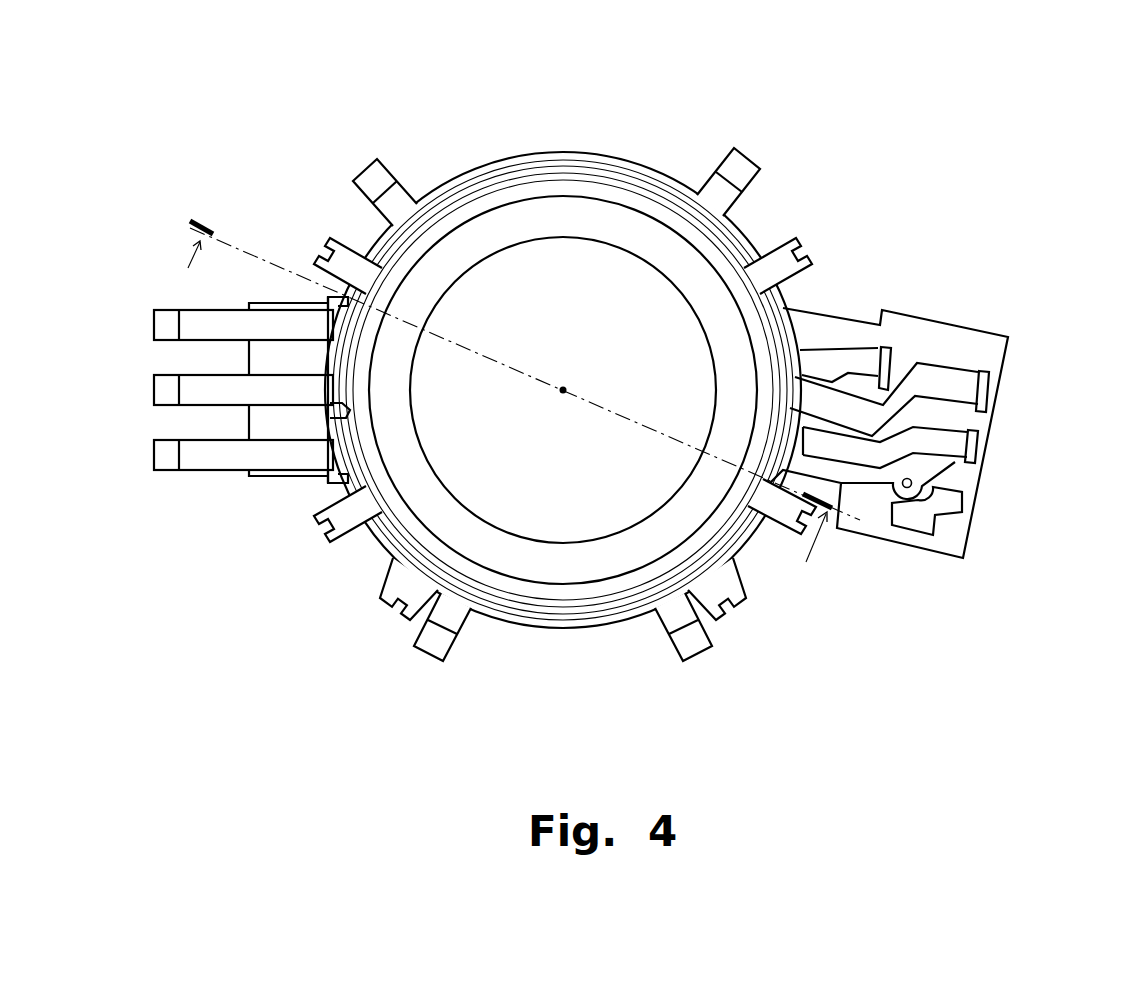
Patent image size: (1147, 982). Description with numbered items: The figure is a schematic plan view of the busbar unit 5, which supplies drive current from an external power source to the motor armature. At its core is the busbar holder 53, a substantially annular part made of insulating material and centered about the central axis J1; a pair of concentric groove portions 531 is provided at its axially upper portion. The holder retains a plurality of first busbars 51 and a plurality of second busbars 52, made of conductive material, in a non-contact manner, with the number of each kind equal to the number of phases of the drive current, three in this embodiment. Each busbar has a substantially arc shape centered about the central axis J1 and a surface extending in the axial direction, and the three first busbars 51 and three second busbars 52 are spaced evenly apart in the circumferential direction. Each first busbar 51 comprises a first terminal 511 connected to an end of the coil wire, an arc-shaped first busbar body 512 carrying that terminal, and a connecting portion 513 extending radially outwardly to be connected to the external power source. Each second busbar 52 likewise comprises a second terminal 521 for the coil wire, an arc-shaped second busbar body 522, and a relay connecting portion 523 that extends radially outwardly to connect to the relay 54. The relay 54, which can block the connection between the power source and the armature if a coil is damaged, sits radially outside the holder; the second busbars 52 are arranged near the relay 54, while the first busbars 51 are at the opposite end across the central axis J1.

The busbar unit 5 is at (186, 71).
The first busbar 51 is at (262, 412).
The first terminal 511 is at (322, 250).
The first busbar body 512 is at (328, 302).
The connecting portion 513 is at (185, 318).
The second busbar 52 is at (825, 434).
The second terminal 521 is at (810, 250).
The second busbar body 522 is at (848, 355).
The relay connecting portion 523 is at (847, 360).
The busbar holder 53 is at (563, 350).
The groove portions 531 is at (510, 186).
The relay 54 is at (1000, 432).
The central axis J1 is at (574, 380).